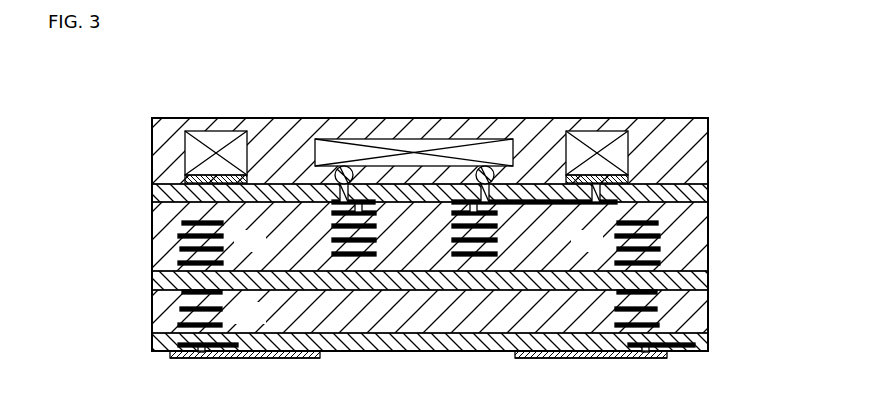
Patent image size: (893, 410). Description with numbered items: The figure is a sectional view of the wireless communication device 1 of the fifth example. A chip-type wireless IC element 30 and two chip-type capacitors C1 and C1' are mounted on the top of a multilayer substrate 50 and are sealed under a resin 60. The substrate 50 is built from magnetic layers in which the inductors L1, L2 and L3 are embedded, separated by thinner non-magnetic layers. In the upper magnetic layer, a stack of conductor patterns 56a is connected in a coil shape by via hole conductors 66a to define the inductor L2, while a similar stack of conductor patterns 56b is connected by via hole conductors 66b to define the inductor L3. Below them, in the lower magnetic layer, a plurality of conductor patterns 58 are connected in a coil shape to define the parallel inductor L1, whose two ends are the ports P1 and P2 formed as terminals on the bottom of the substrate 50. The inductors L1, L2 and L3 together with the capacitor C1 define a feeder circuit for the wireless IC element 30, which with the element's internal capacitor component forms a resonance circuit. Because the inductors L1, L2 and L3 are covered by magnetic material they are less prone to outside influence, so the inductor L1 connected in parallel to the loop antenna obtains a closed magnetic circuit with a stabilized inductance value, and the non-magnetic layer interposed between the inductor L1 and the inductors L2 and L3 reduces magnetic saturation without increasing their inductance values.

The wireless communication device 1 is at (420, 56).
The resin 60 is at (298, 118).
The wireless IC element 30 is at (451, 143).
The capacitor C1 is at (597, 126).
The capacitor C1' is at (216, 133).
The substrate 50 is at (432, 268).
The conductor pattern 58 is at (165, 352).
The port P1 is at (245, 366).
The port P2 is at (605, 366).
The via hole conductor 66a is at (268, 359).
The via hole conductor 66b is at (553, 359).
The conductor pattern 56a is at (362, 256).
The conductor pattern 56b is at (468, 256).
The parallel inductor L1 is at (418, 308).
The inductor L2 is at (277, 238).
The inductor L3 is at (556, 238).